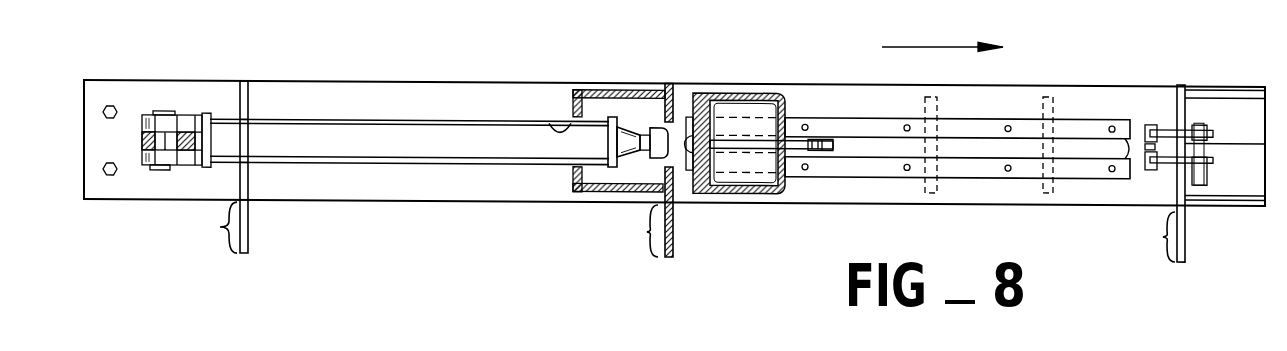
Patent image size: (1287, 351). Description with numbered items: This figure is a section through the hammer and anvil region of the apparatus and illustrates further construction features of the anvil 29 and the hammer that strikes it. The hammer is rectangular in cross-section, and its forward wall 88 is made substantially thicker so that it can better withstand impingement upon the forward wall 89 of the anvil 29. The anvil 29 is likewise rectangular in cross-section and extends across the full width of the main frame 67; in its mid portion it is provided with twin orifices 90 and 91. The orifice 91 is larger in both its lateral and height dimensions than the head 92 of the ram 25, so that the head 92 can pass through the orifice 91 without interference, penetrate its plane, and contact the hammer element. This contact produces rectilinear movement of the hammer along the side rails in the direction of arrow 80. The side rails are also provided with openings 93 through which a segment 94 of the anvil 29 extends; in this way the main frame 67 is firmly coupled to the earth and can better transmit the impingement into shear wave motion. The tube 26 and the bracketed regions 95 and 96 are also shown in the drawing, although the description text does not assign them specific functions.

The ram 25 is at (641, 131).
The tube 26 is at (424, 118).
The anvil 29 is at (617, 86).
The main frame 67 is at (390, 200).
The arrow 80 is at (925, 42).
The forward wall 88 is at (720, 179).
The forward wall 89 is at (676, 167).
The orifice 90 is at (676, 129).
The orifice 91 is at (549, 120).
The head 92 is at (657, 156).
The openings 93 is at (249, 200).
The segment 94 is at (631, 231).
The left section 95 is at (206, 227).
The right section 96 is at (1146, 237).